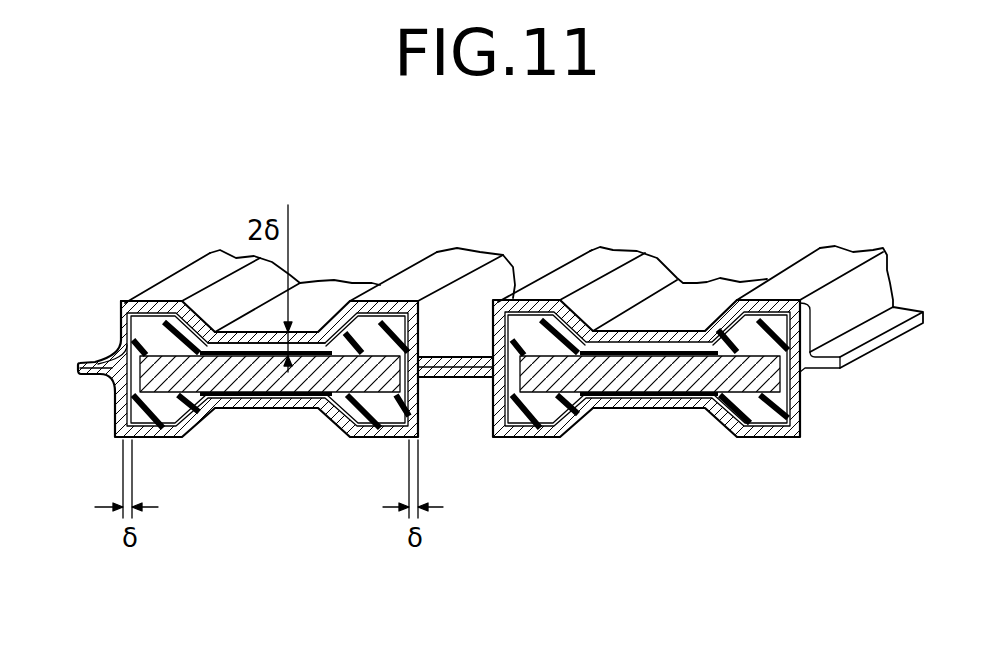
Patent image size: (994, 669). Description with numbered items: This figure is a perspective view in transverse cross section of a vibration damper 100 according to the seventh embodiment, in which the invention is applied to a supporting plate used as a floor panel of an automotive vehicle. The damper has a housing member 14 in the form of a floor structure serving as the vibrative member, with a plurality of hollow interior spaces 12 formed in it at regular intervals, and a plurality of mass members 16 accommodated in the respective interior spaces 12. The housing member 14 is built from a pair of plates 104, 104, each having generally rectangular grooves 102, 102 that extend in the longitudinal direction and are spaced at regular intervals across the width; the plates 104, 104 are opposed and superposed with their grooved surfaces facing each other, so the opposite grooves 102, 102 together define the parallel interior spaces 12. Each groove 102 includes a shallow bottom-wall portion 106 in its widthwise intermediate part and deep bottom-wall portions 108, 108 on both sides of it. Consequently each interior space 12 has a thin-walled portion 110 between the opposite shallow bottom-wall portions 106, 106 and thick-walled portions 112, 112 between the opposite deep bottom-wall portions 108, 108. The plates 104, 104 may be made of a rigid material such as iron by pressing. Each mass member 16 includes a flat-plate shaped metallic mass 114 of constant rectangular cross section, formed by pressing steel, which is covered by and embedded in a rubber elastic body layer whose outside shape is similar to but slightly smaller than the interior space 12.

The interior space 12 is at (118, 298).
The housing member 14 is at (190, 257).
The mass member 16 is at (402, 308).
The vibration damper 100 is at (738, 200).
The groove 102 is at (367, 583).
The plate 104 is at (844, 490).
The shallow bottom-wall portion 106 is at (287, 393).
The deep bottom-wall portion 108 is at (193, 430).
The thin-walled portion 110 is at (252, 344).
The thick-walled portion 112 is at (153, 314).
The metallic mass 114 is at (175, 390).